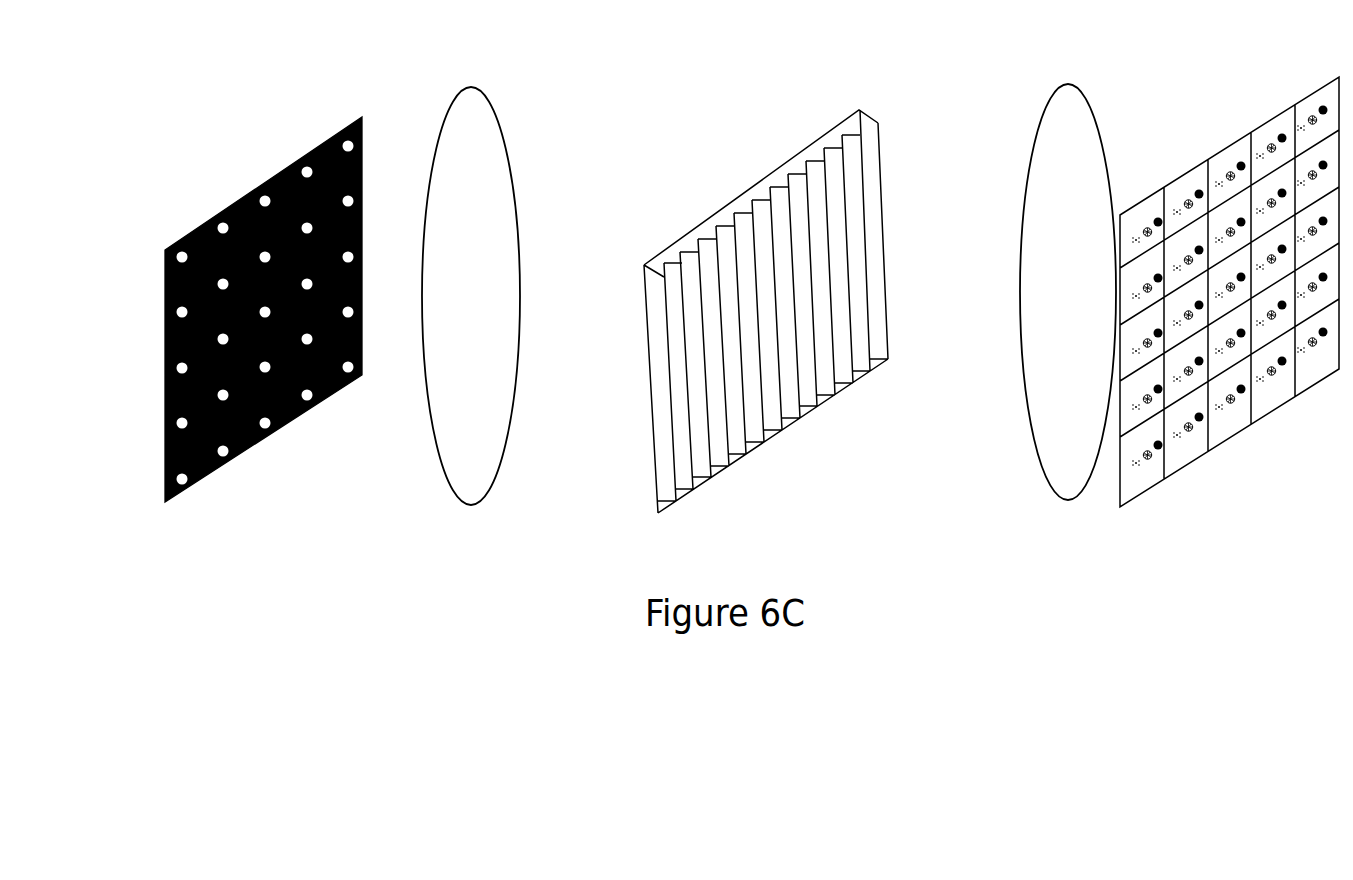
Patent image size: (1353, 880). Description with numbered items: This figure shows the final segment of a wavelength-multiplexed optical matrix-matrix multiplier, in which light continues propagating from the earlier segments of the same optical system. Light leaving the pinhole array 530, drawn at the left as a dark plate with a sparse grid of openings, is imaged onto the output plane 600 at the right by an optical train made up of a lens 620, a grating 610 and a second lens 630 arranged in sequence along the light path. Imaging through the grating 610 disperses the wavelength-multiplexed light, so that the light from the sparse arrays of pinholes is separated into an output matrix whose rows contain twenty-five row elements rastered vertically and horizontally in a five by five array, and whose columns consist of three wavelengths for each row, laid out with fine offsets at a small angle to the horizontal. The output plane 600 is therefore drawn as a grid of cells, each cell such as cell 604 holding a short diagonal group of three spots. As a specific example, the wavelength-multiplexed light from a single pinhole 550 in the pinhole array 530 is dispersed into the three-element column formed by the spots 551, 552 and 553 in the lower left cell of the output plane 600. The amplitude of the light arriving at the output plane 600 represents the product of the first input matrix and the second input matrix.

The pinhole array 530 is at (362, 117).
The pinhole 550 is at (352, 150).
The lens 620 is at (468, 88).
The grating 610 is at (812, 146).
The lens 630 is at (1066, 84).
The output plane 600 is at (1283, 112).
The pixel 604 is at (1182, 202).
The spot 551 is at (1160, 450).
The spot 552 is at (1149, 459).
The spot 553 is at (1137, 468).